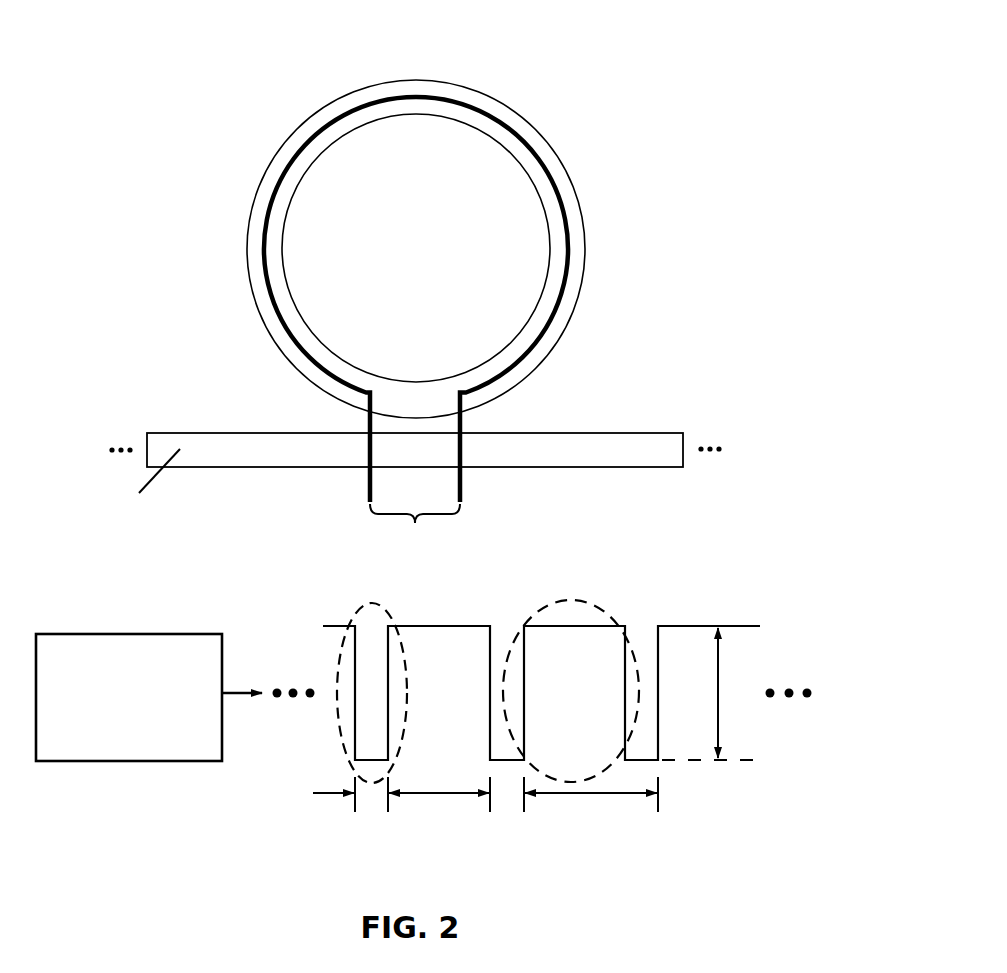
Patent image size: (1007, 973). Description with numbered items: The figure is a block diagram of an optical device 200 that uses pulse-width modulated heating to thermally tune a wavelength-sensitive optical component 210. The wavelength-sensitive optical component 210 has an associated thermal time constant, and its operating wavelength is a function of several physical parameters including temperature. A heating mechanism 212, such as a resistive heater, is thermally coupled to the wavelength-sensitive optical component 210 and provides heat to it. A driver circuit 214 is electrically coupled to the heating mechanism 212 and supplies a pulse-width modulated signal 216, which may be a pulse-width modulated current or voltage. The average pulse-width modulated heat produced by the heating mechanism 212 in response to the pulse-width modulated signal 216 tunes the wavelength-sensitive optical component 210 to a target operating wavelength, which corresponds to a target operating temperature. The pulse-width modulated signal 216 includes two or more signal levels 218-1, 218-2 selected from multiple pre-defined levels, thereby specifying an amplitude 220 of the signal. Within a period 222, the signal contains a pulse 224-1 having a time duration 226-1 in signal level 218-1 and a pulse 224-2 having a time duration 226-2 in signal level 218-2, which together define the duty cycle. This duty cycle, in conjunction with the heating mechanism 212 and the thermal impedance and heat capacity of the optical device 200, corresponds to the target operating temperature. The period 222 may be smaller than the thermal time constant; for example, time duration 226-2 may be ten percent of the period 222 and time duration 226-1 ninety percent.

The optical device 200 is at (548, 63).
The wavelength-sensitive optical component 210 is at (300, 125).
The heating mechanism 212 is at (563, 290).
The driver circuit 214 is at (175, 697).
The pulse-width modulated signal 216 is at (448, 625).
The signal level 218-1 is at (767, 630).
The signal level 218-2 is at (753, 763).
The amplitude 220 is at (717, 675).
The period 222 is at (590, 793).
The pulse 224-1 is at (578, 603).
The pulse 224-2 is at (340, 677).
The time duration 226-1 is at (440, 793).
The time duration 226-2 is at (372, 790).